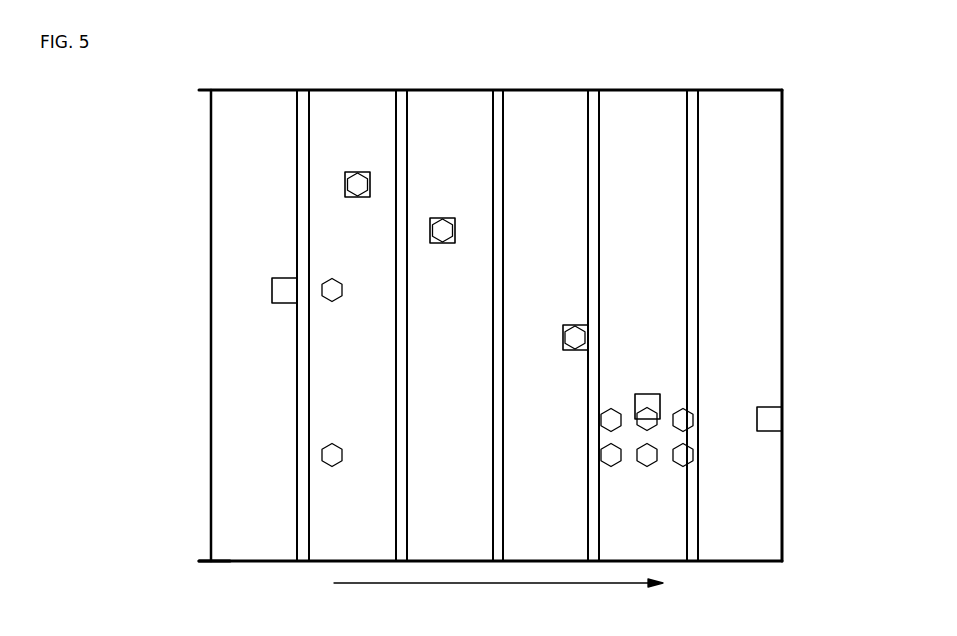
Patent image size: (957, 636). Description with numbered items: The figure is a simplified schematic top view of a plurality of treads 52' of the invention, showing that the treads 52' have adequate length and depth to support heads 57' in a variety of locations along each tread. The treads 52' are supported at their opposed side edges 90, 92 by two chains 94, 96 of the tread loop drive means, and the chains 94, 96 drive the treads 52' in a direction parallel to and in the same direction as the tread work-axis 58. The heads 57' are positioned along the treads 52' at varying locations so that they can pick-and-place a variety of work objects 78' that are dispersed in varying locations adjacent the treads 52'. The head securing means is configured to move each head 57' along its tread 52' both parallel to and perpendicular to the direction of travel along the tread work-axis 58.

The chain 94 is at (210, 88).
The side edge of the treads 90 is at (227, 92).
The side edge of the treads 92 is at (232, 561).
The chain 96 is at (205, 563).
The tread 52' is at (514, 309).
The head 57' is at (533, 300).
The work object 78' is at (507, 320).
The tread work-axis 58 is at (478, 585).